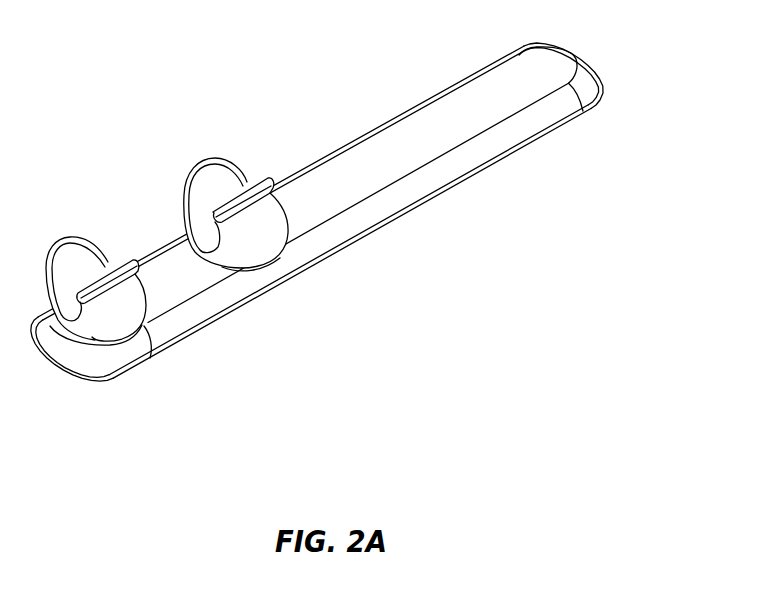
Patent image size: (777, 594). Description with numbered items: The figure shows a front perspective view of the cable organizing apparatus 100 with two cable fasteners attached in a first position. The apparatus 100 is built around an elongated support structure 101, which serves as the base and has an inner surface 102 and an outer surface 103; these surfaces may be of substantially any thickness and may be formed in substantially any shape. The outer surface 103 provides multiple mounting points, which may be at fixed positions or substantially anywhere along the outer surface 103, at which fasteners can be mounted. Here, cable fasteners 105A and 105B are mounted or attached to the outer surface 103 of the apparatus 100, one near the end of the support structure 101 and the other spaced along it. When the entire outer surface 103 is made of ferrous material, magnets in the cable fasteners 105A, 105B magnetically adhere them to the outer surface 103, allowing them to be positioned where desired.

The cable organizing apparatus 100 is at (341, 63).
The support structure 101 is at (463, 160).
The inner surface 102 is at (569, 122).
The outer surface 103 is at (387, 173).
The cable fastener 105A is at (121, 318).
The cable fastener 105B is at (260, 233).